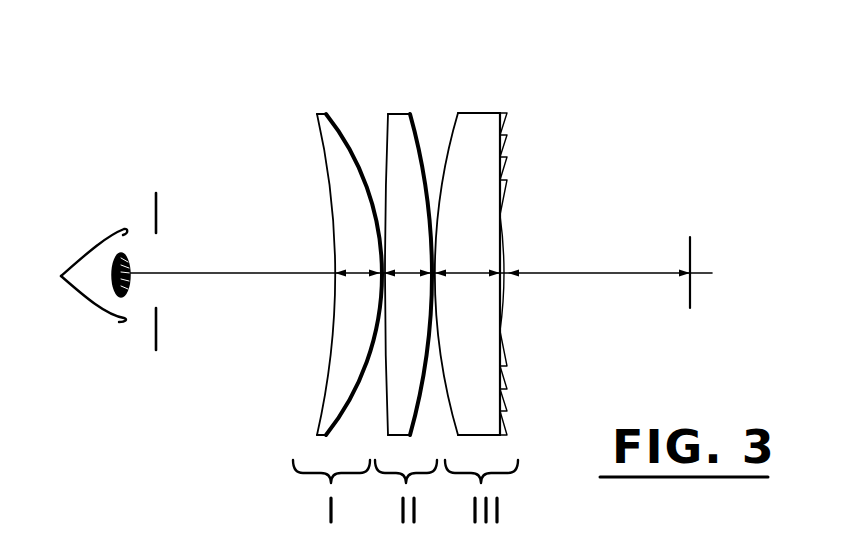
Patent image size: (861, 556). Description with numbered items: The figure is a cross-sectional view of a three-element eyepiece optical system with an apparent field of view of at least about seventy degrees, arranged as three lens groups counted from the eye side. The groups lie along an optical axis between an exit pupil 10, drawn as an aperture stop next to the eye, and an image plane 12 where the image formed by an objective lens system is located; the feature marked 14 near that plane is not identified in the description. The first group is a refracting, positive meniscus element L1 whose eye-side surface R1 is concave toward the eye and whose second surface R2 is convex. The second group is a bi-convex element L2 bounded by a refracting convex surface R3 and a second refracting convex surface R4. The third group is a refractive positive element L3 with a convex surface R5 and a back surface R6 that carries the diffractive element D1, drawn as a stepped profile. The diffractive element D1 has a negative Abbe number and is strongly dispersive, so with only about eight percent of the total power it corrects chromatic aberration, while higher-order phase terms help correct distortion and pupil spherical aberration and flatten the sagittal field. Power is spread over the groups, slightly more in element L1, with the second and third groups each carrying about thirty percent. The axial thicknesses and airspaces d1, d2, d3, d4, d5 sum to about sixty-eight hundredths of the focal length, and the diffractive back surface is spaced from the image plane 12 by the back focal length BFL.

The exit pupil 10 is at (156, 340).
The image plane 12 is at (690, 295).
The intermediate image / focal point 14 is at (705, 277).
The refracting meniscus positive element L1 is at (313, 234).
The bi-convex element L2 is at (418, 221).
The refractive element L3 is at (528, 236).
The concave surface R1 is at (312, 128).
The convex surface R2 is at (336, 125).
The refracting convex surface R3 is at (382, 126).
The second refracting convex surface R4 is at (414, 126).
The convex surface R5 is at (455, 127).
The sixth surface radius R6 is at (500, 114).
The diffractive element D1 is at (516, 138).
The axial thickness d1 is at (358, 247).
The airspace d2 is at (357, 297).
The axial thickness d3 is at (408, 247).
The airspace d4 is at (460, 297).
The axial thickness d5 is at (472, 247).
The back focal length BFL is at (596, 246).